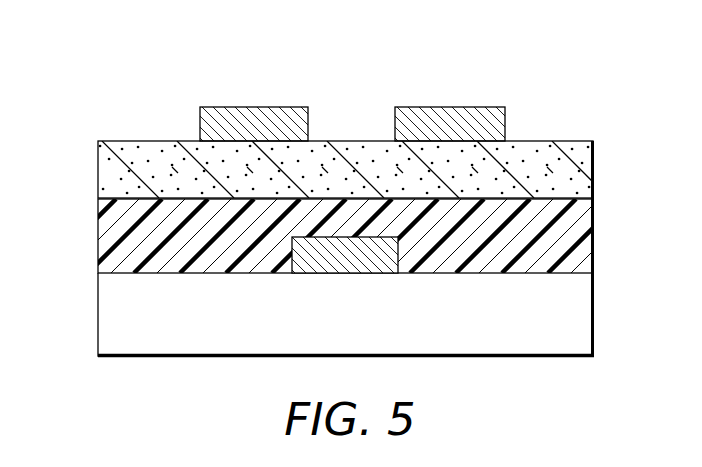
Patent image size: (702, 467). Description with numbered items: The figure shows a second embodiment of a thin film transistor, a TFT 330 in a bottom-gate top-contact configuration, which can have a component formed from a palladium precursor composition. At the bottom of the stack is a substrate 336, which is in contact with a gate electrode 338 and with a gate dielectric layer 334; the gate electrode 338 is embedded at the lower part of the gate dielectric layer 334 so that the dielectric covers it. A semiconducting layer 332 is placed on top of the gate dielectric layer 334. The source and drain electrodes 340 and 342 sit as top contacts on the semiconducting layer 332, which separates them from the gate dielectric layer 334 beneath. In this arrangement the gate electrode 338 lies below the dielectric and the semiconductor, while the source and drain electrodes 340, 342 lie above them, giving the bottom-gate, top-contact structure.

The TFT 330 is at (124, 63).
The semiconducting layer 332 is at (593, 171).
The gate dielectric layer 334 is at (98, 199).
The substrate 336 is at (587, 313).
The gate electrode 338 is at (350, 258).
The source electrode 340 is at (255, 107).
The drain electrode 342 is at (450, 107).